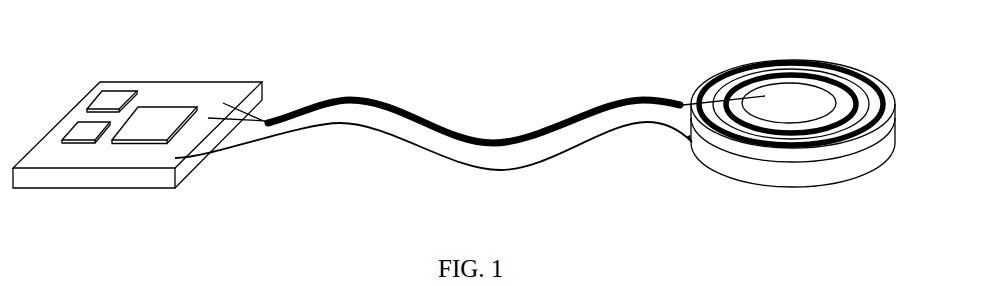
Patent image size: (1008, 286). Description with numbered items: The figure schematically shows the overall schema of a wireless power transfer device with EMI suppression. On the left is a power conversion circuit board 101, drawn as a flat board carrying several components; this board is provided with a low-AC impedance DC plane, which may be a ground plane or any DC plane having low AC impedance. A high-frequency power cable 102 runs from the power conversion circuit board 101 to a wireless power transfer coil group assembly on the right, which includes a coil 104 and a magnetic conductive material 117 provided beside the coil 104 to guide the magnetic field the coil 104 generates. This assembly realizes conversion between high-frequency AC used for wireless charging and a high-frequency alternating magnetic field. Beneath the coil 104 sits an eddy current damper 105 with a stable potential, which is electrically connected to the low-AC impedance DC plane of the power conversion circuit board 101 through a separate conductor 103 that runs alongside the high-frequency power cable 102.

The power conversion circuit board 101 is at (118, 80).
The high-frequency power cable 102 is at (356, 95).
The conductor 103 is at (436, 156).
The coil 104 is at (748, 67).
The eddy current damper 105 is at (735, 172).
The magnetic conductive material 117 is at (783, 61).